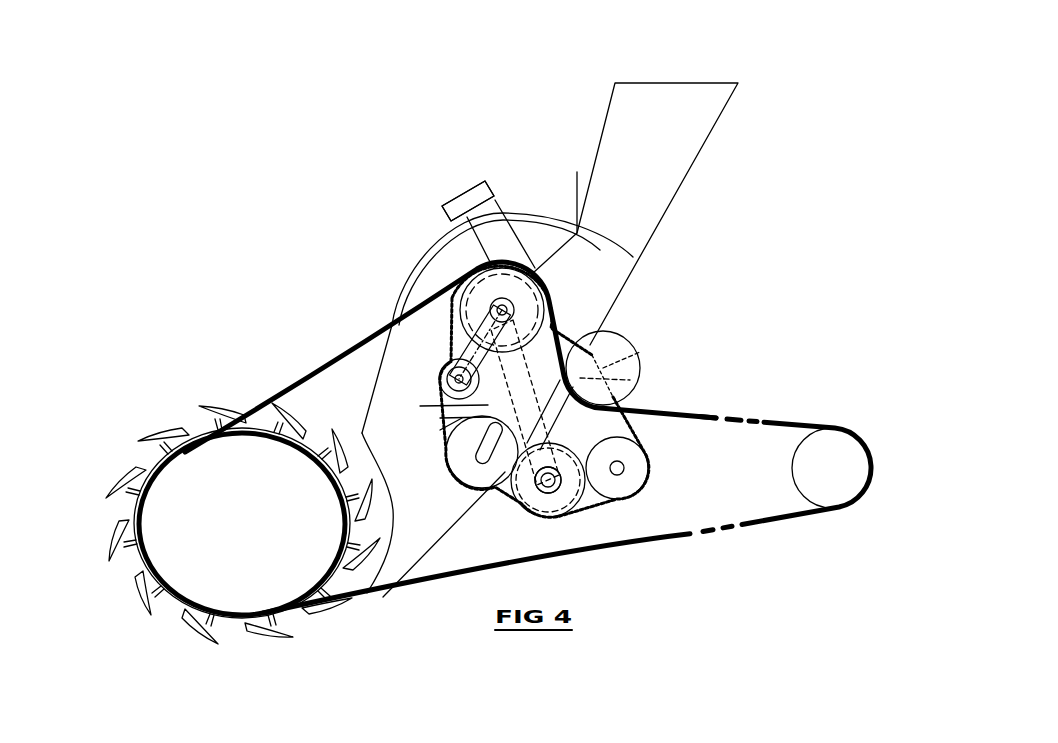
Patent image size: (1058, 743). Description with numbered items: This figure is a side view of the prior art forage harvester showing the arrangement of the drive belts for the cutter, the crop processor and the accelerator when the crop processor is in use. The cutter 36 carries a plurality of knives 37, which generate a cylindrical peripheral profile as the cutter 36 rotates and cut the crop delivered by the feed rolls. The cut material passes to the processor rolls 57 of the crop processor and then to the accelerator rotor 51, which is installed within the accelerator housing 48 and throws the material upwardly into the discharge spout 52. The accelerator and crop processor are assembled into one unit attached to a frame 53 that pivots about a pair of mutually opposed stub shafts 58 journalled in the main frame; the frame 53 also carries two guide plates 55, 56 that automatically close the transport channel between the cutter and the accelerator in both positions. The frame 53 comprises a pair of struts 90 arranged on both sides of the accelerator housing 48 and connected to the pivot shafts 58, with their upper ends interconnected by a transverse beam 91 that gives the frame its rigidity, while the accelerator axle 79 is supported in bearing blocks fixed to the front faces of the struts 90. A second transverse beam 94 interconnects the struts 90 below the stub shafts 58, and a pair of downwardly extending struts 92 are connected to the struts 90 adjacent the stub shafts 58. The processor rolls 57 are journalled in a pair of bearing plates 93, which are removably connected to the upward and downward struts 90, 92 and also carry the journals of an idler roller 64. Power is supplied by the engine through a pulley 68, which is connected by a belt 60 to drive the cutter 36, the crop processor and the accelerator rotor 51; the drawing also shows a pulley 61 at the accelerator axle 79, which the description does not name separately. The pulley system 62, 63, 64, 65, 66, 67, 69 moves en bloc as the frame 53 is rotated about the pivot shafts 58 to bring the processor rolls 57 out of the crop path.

The cutter 36 is at (178, 440).
The knives 37 is at (216, 630).
The accelerator housing 48 is at (405, 297).
The accelerator rotor 51 is at (443, 262).
The discharge spout 52 is at (687, 143).
The frame 53 is at (442, 207).
The guide plate 55 is at (420, 406).
The guide plate 56 is at (567, 511).
The processor rolls 57 is at (537, 497).
The stub shafts 58 is at (605, 364).
The belt 60 is at (705, 411).
The drive pulley 61 is at (533, 268).
The pulley system 62 is at (530, 289).
The pulley system 63 is at (638, 354).
The idler roller 64 is at (637, 470).
The pulley system 65 is at (440, 378).
The pulley system 66 is at (440, 430).
The pulley system 67 is at (557, 515).
The pulley 68 is at (842, 458).
The pulley system 69 is at (449, 467).
The accelerator axle 79 is at (578, 192).
The struts 90 is at (497, 208).
The transverse beam 91 is at (468, 198).
The downwardly extending struts 92 is at (636, 421).
The bearing plates 93 is at (440, 418).
The second transverse beam 94 is at (605, 380).